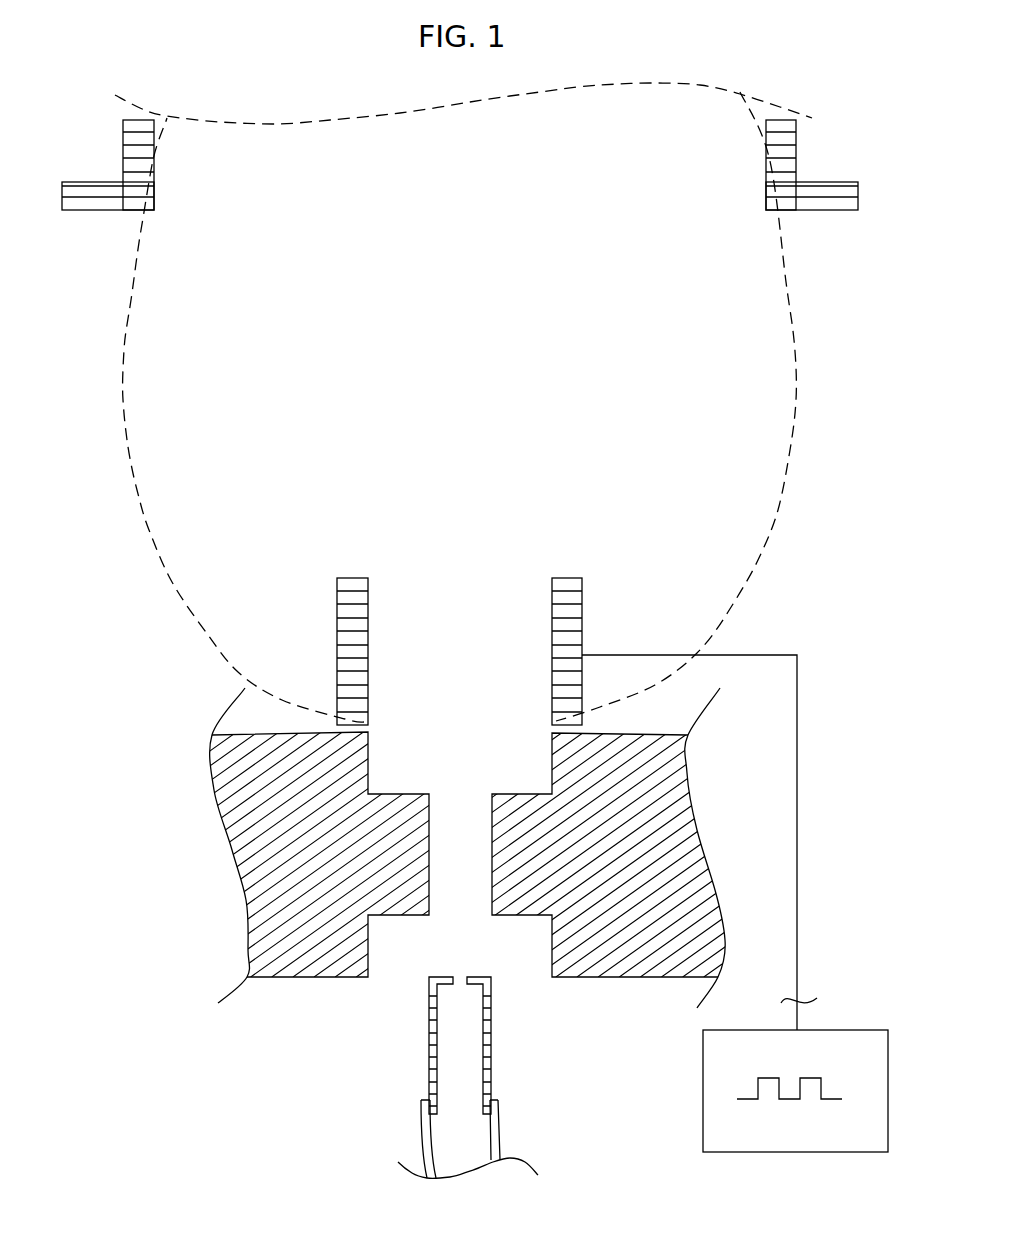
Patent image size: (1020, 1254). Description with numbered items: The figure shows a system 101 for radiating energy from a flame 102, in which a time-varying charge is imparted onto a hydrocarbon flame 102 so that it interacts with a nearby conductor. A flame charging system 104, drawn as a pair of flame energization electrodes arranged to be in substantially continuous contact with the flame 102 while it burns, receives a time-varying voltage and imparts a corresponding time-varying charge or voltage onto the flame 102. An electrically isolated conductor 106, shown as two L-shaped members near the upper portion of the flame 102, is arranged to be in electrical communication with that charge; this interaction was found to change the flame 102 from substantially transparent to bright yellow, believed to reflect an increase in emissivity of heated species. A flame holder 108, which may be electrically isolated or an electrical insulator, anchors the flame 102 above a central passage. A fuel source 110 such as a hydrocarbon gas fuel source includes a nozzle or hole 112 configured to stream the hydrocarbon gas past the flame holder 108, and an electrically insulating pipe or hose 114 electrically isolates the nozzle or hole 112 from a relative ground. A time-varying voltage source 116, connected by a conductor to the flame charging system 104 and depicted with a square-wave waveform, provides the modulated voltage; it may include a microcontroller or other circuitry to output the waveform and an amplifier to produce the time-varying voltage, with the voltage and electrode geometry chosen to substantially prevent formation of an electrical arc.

The system 101 is at (645, 62).
The flame 102 is at (127, 290).
The flame charging system 104 is at (552, 605).
The electrically isolated conductor 106 is at (155, 211).
The flame holder 108 is at (417, 794).
The fuel source 110 is at (429, 1047).
The nozzle or hole 112 is at (455, 952).
The electrically insulating pipe or hose 114 is at (421, 1135).
The time-varying voltage source 116 is at (703, 1047).